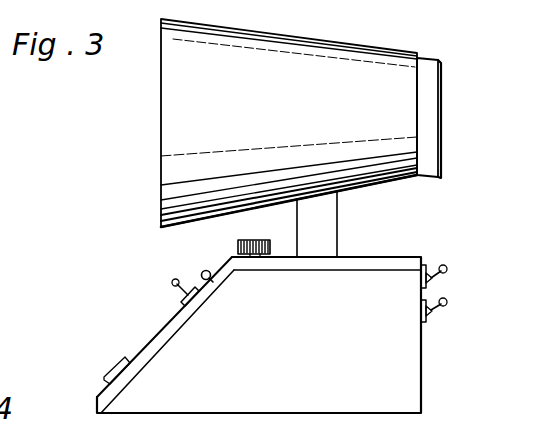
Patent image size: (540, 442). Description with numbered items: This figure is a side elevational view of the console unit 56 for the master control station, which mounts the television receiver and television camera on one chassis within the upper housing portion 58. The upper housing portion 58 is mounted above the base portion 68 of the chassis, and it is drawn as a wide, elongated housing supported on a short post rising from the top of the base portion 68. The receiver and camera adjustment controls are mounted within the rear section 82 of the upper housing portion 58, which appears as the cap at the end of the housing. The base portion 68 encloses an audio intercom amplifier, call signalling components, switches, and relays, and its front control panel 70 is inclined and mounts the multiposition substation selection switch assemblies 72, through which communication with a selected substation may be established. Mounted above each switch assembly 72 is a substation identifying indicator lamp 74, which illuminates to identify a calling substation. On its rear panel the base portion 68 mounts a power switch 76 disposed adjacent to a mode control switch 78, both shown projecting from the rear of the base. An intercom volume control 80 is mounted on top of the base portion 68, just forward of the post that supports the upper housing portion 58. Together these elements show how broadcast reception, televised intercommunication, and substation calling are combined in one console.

The console unit 56 is at (456, 75).
The upper housing portion 58 is at (358, 57).
The rear section 82 is at (428, 153).
The base portion 68 is at (400, 357).
The front control panel 70 is at (146, 344).
The substation selection switch assembly 72 is at (174, 279).
The substation identifying indicator lamp 74 is at (209, 281).
The power switch 76 is at (441, 314).
The mode control switch 78 is at (444, 266).
The intercom volume control 80 is at (255, 255).